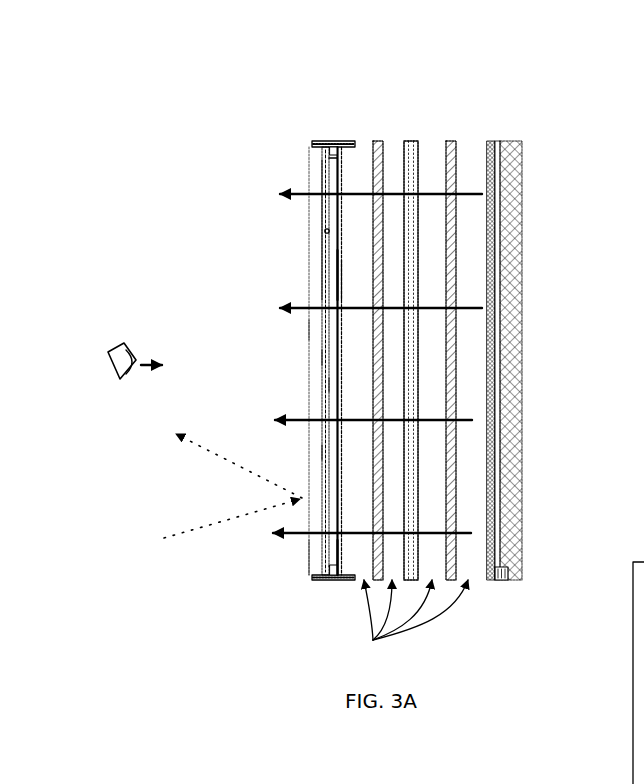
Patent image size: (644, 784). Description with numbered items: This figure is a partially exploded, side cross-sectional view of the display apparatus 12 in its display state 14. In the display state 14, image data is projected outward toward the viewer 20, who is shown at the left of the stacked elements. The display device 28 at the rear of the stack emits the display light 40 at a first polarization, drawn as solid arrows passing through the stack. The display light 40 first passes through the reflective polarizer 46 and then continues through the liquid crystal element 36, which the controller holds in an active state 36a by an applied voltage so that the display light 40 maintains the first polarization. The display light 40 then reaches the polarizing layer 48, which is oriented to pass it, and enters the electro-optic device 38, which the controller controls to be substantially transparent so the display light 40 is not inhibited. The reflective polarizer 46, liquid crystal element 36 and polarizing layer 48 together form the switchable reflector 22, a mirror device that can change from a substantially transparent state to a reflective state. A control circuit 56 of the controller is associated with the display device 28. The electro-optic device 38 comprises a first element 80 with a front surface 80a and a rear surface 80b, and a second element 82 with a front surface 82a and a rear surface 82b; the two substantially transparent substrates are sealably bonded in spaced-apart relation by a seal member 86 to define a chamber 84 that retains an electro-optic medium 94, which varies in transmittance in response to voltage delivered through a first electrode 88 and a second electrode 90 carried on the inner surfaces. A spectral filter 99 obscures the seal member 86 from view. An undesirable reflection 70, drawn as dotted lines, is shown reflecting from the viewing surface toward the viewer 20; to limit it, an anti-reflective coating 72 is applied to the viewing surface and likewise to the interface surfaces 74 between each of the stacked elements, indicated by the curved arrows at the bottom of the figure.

The display apparatus 12 is at (332, 93).
The display state 14 is at (332, 93).
The viewer 20 is at (110, 357).
The switchable reflector 22 is at (370, 147).
The display device 28 is at (510, 142).
The liquid crystal element 36 is at (412, 383).
The active state 36a is at (411, 360).
The electro-optic device 38 is at (307, 157).
The display light 40 is at (457, 194).
The reflective polarizer 46 is at (455, 170).
The polarizing layer 48 is at (372, 340).
The control circuit 56 is at (512, 518).
The undesirable reflection 70 is at (212, 450).
The anti-reflective coating 72 is at (308, 550).
The interface surfaces 74 is at (373, 640).
The first element 80 is at (312, 180).
The front surface 80a is at (308, 215).
The rear surface 80b is at (326, 237).
The second element 82 is at (345, 250).
The front surface 82a is at (338, 272).
The rear surface 82b is at (358, 287).
The chamber 84 is at (312, 328).
The seal member 86 is at (333, 150).
The first electrode 88 is at (312, 358).
The second electrode 90 is at (312, 385).
The electro-optic medium 94 is at (312, 453).
The spectral filter 99 is at (337, 553).